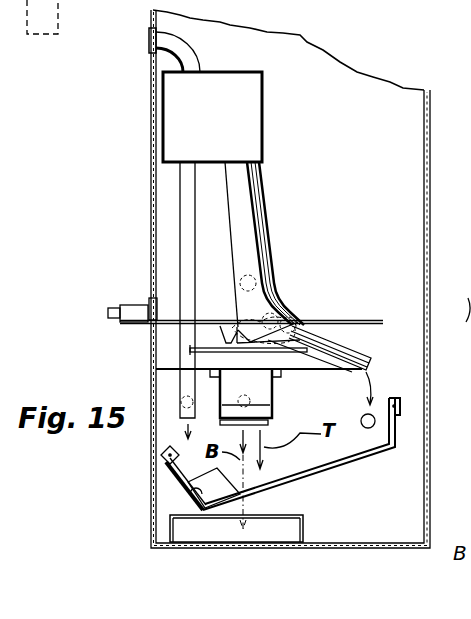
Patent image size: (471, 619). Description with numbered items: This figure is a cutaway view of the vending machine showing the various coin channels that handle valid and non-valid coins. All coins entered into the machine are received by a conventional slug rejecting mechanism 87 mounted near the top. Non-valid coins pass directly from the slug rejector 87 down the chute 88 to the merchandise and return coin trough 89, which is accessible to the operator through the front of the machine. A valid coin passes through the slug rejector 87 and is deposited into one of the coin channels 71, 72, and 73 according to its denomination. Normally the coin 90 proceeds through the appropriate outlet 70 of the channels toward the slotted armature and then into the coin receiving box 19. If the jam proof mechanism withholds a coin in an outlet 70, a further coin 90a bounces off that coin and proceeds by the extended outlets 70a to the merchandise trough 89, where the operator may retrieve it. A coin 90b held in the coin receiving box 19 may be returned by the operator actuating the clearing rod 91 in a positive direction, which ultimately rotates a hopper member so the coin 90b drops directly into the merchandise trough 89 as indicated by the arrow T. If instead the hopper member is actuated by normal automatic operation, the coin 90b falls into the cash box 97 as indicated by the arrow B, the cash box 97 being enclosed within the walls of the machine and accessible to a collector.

The slug rejecting mechanism 87 is at (247, 118).
The chute 88 is at (183, 198).
The clearing rod 91 is at (110, 306).
The coin channel 71 is at (259, 181).
The coin channel 72 is at (262, 198).
The coin channel 73 is at (263, 218).
The coin 90 is at (263, 271).
The further coin 90a is at (310, 314).
The outlet 70 is at (220, 326).
The extended outlets 70a is at (376, 358).
The coin 90b is at (252, 397).
The coin receiving box 19 is at (285, 410).
The merchandise and return coin trough 89 is at (163, 470).
The cash box 97 is at (303, 517).